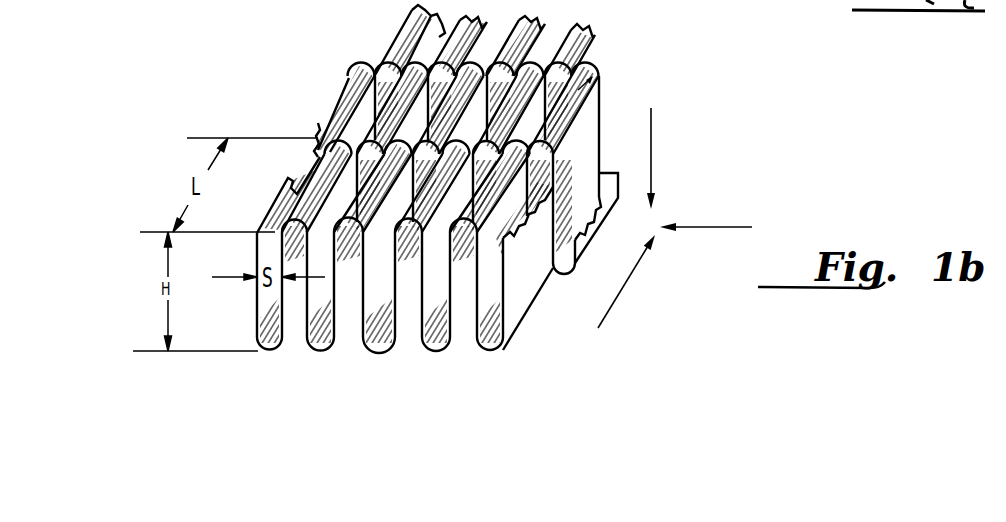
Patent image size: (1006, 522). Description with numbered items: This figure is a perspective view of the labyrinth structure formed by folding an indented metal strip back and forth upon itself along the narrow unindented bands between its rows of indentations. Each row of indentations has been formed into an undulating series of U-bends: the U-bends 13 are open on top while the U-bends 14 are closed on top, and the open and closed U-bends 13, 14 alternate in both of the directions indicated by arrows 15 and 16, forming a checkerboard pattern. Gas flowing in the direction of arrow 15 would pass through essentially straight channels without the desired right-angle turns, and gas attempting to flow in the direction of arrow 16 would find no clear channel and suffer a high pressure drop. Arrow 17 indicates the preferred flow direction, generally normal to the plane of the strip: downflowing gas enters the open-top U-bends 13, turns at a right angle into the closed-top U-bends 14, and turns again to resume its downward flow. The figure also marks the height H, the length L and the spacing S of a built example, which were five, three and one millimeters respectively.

The U-bends open on top 13 is at (463, 376).
The U-bends closed on top 14 is at (400, 45).
The arrow 15 is at (619, 299).
The arrow 16 is at (719, 229).
The arrow 17 is at (652, 143).